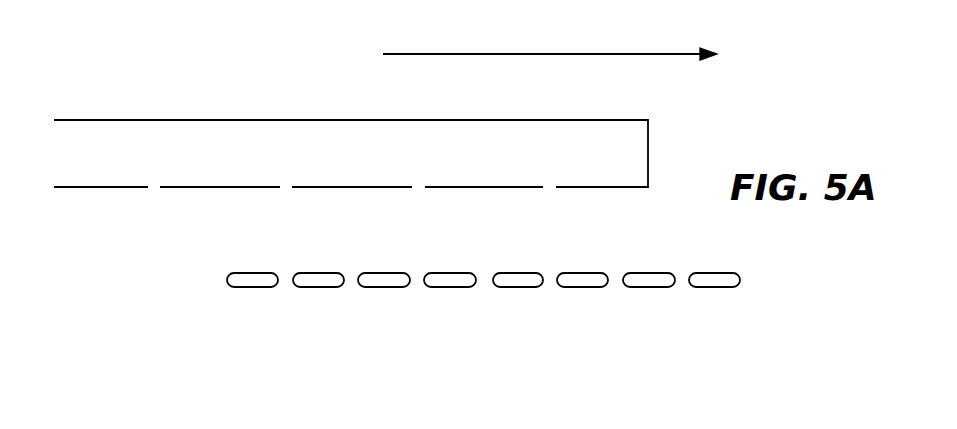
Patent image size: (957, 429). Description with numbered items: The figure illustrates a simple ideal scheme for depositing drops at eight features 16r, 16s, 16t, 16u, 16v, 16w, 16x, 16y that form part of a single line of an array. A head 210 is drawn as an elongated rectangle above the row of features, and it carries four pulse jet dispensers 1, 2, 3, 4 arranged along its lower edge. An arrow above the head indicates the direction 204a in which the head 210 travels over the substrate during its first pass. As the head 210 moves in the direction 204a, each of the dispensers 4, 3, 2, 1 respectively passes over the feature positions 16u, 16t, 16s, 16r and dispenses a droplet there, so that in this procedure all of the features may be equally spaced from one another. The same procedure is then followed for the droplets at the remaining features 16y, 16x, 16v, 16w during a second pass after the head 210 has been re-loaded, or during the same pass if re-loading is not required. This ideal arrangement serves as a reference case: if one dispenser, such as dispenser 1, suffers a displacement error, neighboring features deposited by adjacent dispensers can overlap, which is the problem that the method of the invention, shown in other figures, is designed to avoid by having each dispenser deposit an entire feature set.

The direction 204a is at (580, 54).
The head 210 is at (93, 187).
The dispenser 1 is at (155, 171).
The dispenser 2 is at (286, 171).
The dispenser 3 is at (418, 171).
The dispenser 4 is at (548, 171).
The feature 16r is at (252, 295).
The feature 16s is at (318, 295).
The feature 16t is at (384, 295).
The feature 16u is at (450, 295).
The feature 16v is at (518, 295).
The feature 16w is at (582, 295).
The feature 16x is at (649, 295).
The feature 16y is at (714, 295).